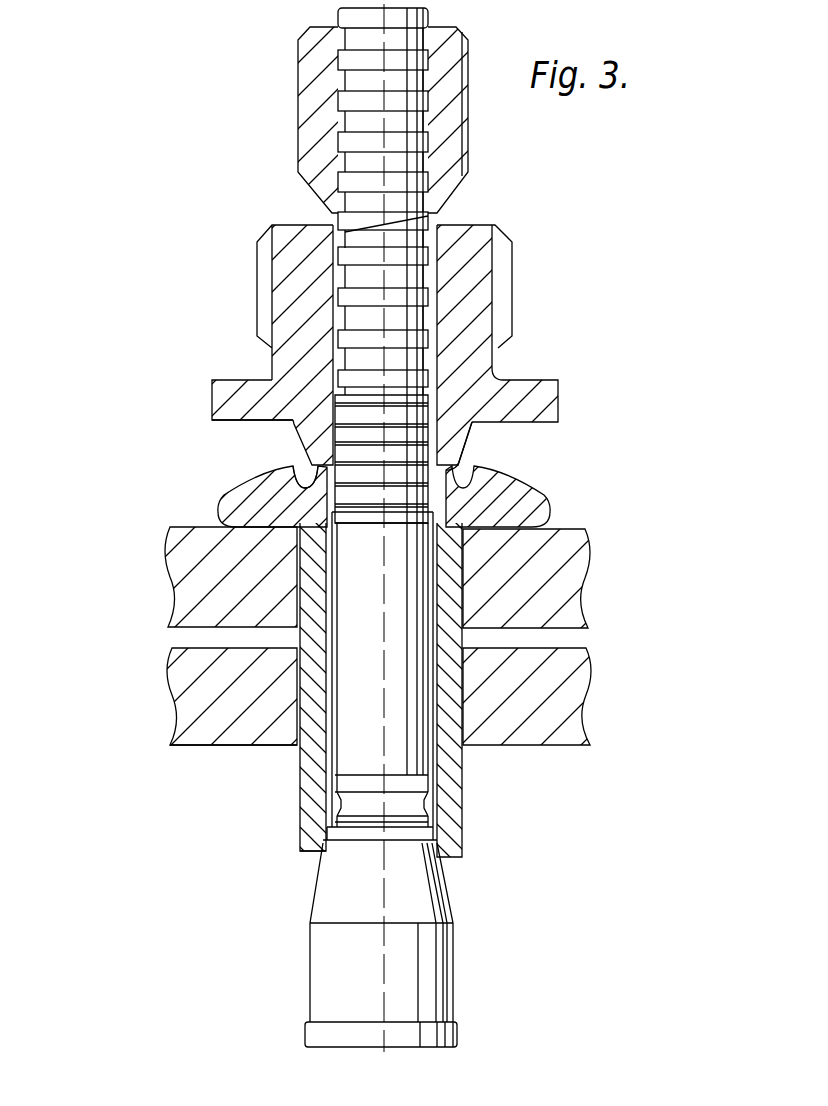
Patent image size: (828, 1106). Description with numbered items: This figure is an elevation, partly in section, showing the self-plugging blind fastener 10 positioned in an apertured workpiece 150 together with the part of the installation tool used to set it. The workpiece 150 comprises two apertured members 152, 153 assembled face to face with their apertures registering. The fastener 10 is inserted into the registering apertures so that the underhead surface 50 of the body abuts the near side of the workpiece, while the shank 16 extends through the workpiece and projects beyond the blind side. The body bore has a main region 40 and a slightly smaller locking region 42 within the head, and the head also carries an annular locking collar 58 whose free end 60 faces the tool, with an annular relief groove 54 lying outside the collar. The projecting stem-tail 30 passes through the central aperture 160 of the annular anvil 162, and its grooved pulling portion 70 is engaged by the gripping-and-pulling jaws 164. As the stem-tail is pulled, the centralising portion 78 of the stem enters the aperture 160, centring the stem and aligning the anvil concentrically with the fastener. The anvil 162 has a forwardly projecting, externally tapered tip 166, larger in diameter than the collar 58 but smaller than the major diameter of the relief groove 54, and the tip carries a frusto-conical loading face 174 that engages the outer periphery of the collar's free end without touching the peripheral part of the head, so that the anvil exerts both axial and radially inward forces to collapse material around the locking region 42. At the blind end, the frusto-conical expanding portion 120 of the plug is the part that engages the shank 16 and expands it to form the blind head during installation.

The self-plugging blind fastener 10 is at (300, 847).
The shank 16 is at (463, 805).
The stem-tail 30 is at (337, 293).
The main region of the bore 40 is at (434, 593).
The locking region 42 is at (293, 498).
The underhead surface 50 is at (349, 634).
The annular relief groove 54 is at (452, 487).
The annular locking collar 58 is at (456, 469).
The free end of the locking collar 60 is at (473, 421).
The grooved pulling portion 70 is at (346, 60).
The centralising portion 78 is at (433, 436).
The frusto-conical expanding portion 120 is at (447, 897).
The apertured workpiece 150 is at (170, 746).
The apertured member 152 is at (170, 595).
The apertured member 153 is at (172, 678).
The central aperture of the anvil 160 is at (336, 400).
The annular anvil 162 is at (205, 397).
The gripping-and-pulling jaws 164 is at (298, 117).
The tip of the anvil 166 is at (298, 431).
The loading face 174 is at (296, 465).